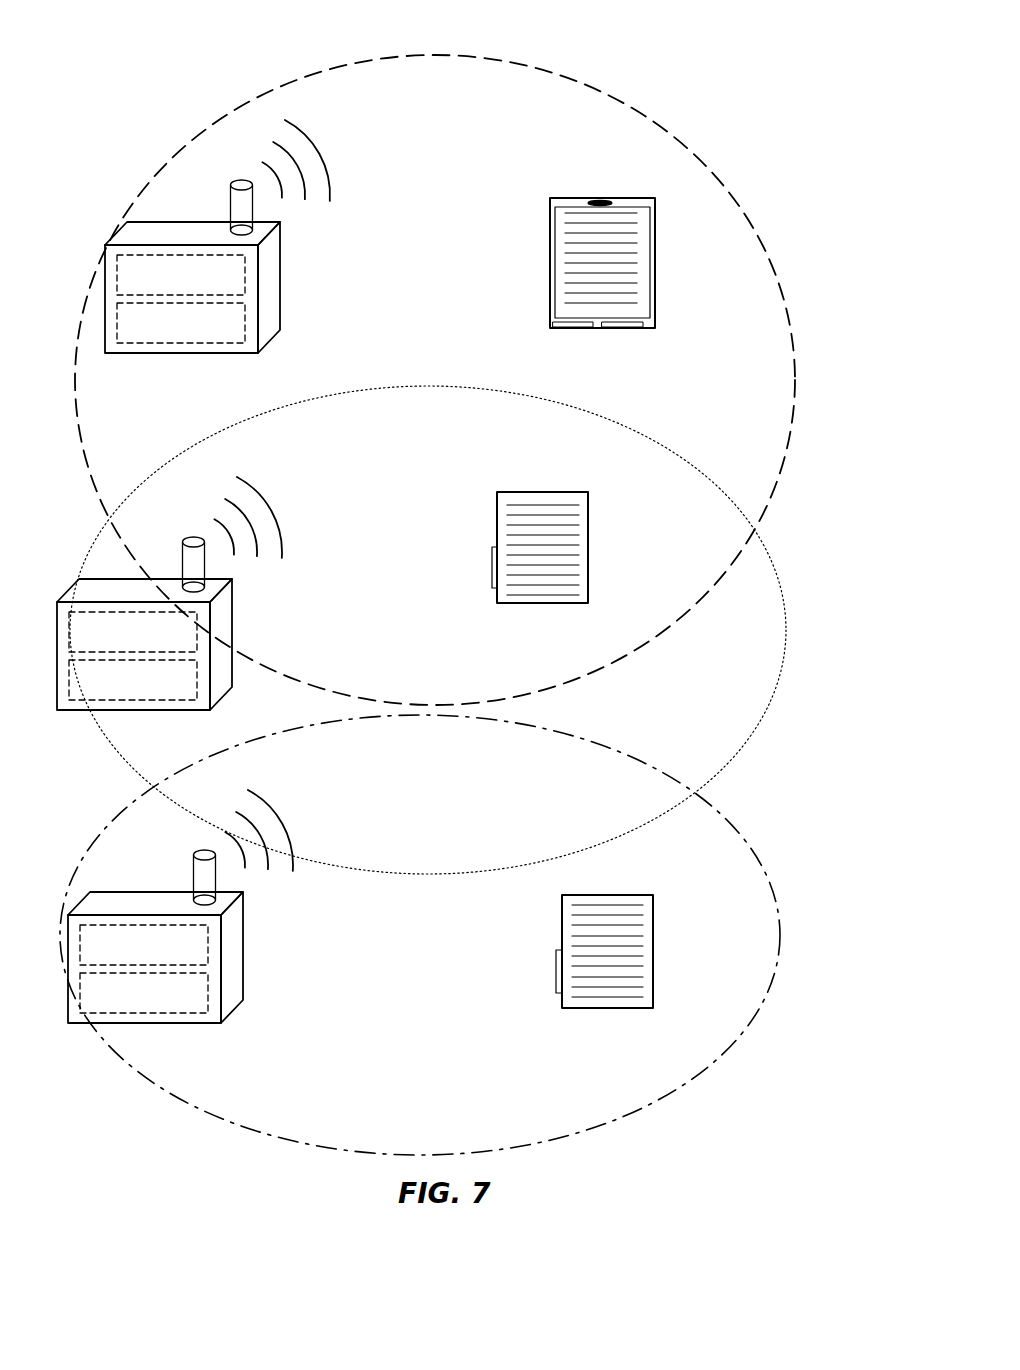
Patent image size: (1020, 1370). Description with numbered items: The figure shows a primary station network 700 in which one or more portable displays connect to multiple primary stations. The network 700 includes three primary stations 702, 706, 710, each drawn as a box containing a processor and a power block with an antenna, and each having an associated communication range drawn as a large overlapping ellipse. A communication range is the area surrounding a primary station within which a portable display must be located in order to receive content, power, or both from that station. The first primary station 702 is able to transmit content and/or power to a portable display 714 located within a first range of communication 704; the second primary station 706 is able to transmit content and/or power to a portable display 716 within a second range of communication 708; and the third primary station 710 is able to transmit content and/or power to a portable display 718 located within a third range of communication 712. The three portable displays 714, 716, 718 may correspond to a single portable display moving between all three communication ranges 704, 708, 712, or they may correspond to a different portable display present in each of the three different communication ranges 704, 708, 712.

The primary station network 700 is at (763, 98).
The primary station 702 is at (269, 263).
The first range of communication 704 is at (787, 455).
The primary station 706 is at (222, 632).
The second range of communication 708 is at (757, 722).
The primary station 710 is at (232, 950).
The third range of communication 712 is at (688, 1082).
The portable display 714 is at (655, 277).
The portable display 716 is at (588, 529).
The portable display 718 is at (653, 928).